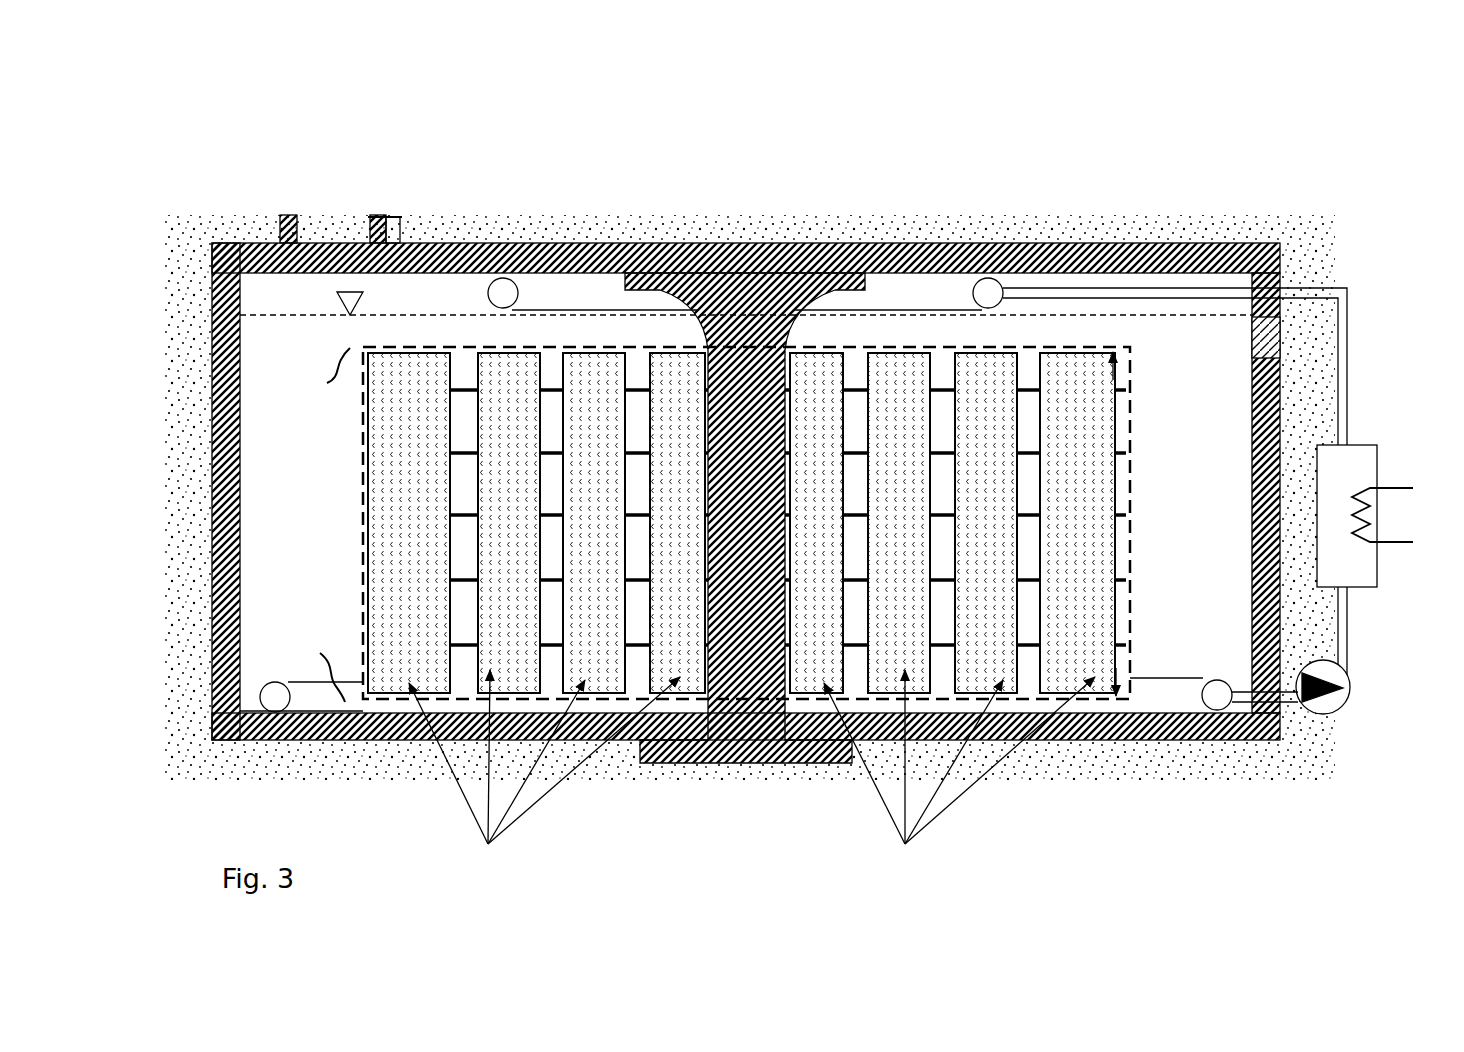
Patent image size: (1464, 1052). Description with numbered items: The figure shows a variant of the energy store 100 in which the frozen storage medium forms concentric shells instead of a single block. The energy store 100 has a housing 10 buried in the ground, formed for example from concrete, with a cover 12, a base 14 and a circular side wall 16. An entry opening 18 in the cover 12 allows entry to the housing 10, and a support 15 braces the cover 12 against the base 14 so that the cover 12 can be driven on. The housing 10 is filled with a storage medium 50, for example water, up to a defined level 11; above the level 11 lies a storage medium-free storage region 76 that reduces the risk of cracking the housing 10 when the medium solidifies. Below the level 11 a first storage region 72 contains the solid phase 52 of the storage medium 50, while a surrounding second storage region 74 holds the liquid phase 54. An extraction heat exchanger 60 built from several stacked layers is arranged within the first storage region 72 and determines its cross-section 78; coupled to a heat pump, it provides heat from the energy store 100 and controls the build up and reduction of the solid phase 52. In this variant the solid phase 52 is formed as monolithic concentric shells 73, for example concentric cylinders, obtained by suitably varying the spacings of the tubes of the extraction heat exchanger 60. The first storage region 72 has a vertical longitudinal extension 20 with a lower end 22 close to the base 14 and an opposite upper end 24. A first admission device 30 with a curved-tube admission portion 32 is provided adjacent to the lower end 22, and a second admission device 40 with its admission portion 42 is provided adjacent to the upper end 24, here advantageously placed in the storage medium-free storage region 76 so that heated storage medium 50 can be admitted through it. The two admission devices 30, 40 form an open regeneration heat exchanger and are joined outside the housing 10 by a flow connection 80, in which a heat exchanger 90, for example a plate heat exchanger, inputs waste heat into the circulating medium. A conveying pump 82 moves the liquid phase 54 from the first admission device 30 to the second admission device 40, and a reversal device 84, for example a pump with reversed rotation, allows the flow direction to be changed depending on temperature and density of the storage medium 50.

The housing 10 is at (675, 482).
The defined level 11 is at (910, 313).
The cover 12 is at (780, 240).
The base 14 is at (1163, 740).
The support 15 is at (708, 657).
The side wall 16 is at (215, 603).
The entry opening 18 is at (380, 217).
The longitudinal extension 20 is at (1115, 560).
The lower end 22 is at (325, 660).
The upper end 24 is at (325, 387).
The first admission device 30 is at (186, 752).
The admission portion 32 is at (263, 706).
The second admission device 40 is at (477, 235).
The admission portion 42 is at (494, 280).
The storage medium 50 is at (258, 333).
The solid phase 52 is at (393, 504).
The liquid phase 54 is at (270, 562).
The extraction heat exchanger 60 is at (456, 380).
The first storage region 72 is at (861, 333).
The concentric shells 73 is at (752, 780).
The second storage region 74 is at (268, 473).
The storage medium-free storage region 76 is at (417, 306).
The cross-section 78 is at (538, 343).
The flow connection 80 is at (1345, 315).
The conveying pump 82 is at (1363, 735).
The reversal device 84 is at (1312, 708).
The heat exchanger 90 is at (1371, 443).
The energy store 100 is at (1233, 230).